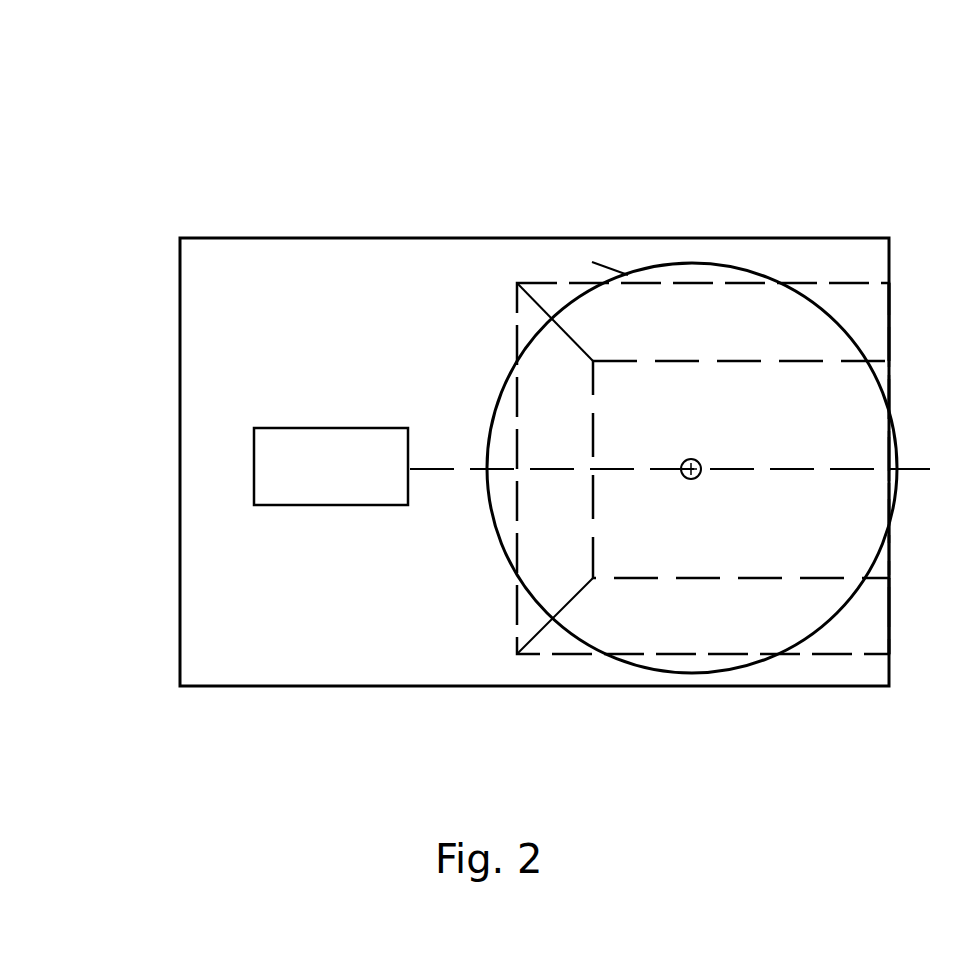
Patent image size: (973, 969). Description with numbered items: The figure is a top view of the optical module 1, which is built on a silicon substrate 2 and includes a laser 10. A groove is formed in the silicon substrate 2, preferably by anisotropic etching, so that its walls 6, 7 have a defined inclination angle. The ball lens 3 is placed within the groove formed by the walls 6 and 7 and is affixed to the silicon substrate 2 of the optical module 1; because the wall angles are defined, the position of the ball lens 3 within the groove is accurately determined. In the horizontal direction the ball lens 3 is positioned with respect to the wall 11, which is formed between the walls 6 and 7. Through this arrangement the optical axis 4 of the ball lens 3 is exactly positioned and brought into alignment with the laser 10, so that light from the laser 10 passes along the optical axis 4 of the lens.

The optical module 1 is at (779, 101).
The silicon substrate 2 is at (205, 240).
The ball lens 3 is at (727, 339).
The optical axis 4 is at (699, 462).
The wall 6 is at (890, 334).
The wall 7 is at (890, 632).
The laser 10 is at (281, 428).
The wall 11 is at (564, 508).